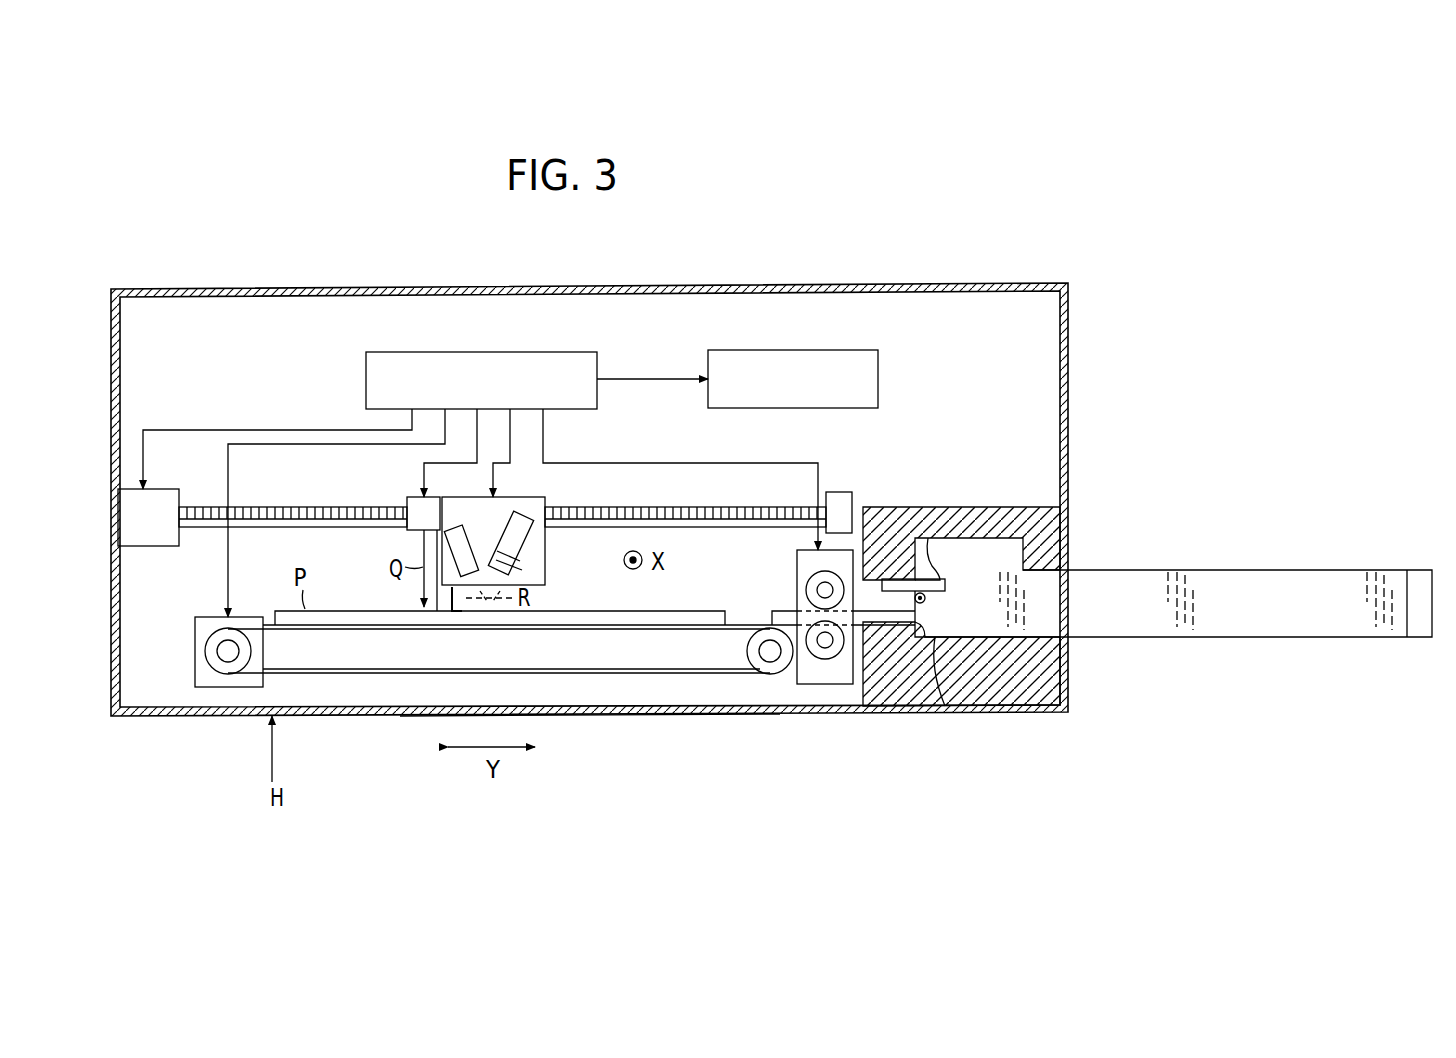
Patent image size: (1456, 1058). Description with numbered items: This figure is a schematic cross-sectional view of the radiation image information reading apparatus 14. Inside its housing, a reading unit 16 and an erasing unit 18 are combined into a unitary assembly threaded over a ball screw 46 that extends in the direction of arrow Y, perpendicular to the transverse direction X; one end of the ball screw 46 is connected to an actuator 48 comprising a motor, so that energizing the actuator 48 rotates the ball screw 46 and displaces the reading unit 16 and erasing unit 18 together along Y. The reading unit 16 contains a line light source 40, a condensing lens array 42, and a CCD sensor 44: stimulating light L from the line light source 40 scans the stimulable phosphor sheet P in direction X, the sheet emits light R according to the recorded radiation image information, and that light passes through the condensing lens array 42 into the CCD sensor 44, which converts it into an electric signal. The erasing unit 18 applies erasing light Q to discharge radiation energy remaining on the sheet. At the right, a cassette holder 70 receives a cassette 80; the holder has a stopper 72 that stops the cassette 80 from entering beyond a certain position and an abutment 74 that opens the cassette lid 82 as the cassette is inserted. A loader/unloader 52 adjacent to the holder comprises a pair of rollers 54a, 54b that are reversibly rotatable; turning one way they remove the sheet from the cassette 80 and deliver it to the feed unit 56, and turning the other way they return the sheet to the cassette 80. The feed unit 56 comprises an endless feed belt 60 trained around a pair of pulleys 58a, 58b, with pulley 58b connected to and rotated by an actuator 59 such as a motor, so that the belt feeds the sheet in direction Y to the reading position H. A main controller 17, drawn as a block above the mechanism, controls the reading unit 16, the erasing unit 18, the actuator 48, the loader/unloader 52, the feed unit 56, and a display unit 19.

The radiation image information reading apparatus 14 is at (1004, 230).
The reading unit 16 is at (504, 512).
The main controller 17 is at (598, 358).
The erasing unit 18 is at (408, 503).
The display unit 19 is at (879, 358).
The line light source 40 is at (469, 527).
The condensing lens array 42 is at (519, 571).
The CCD sensor 44 is at (521, 545).
The ball screw 46 is at (306, 507).
The actuator 48 is at (143, 547).
The loader/unloader 52 is at (815, 683).
The roller 54a is at (830, 652).
The roller 54b is at (813, 592).
The feed unit 56 is at (592, 728).
The pulley 58a is at (770, 655).
The pulley 58b is at (228, 657).
The actuator 59 is at (210, 625).
The endless feed belt 60 is at (665, 674).
The cassette holder 70 is at (1063, 526).
The stopper 72 is at (945, 706).
The abutment 74 is at (932, 570).
The cassette 80 is at (1212, 563).
The cassette lid 82 is at (895, 578).